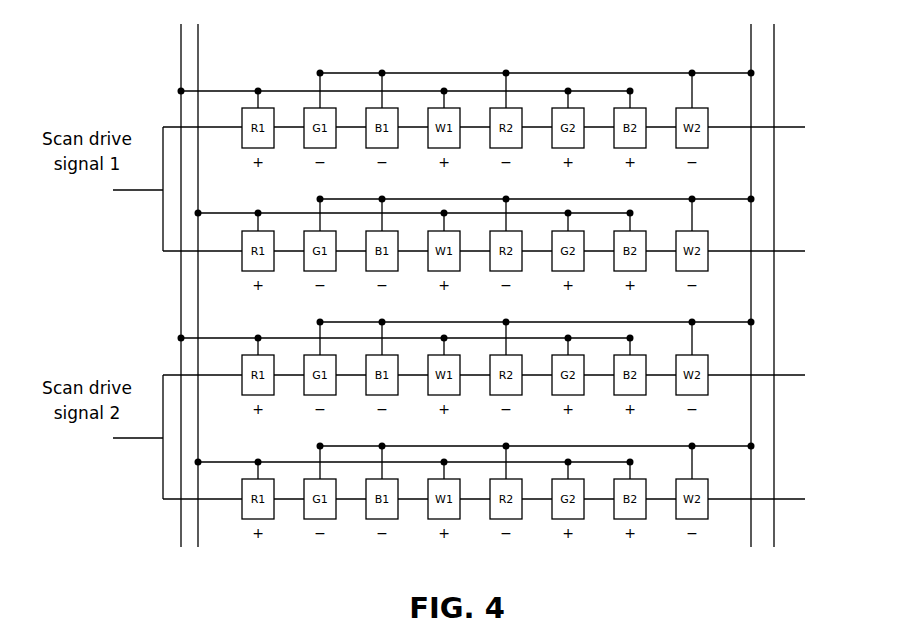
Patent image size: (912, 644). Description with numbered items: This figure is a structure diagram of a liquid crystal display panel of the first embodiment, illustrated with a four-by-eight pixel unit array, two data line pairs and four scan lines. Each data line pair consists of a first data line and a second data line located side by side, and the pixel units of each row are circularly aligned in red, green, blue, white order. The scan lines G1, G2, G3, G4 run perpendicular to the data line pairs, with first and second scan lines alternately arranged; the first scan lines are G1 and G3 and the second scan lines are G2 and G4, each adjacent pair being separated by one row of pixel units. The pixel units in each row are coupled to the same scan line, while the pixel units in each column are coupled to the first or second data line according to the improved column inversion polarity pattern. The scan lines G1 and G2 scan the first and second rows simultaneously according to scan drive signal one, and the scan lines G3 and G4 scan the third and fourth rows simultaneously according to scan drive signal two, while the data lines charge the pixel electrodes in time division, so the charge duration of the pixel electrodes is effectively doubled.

The first scan line G1 is at (501, 126).
The second scan line G2 is at (501, 250).
The first scan line G3 is at (501, 374).
The second scan line G4 is at (501, 498).